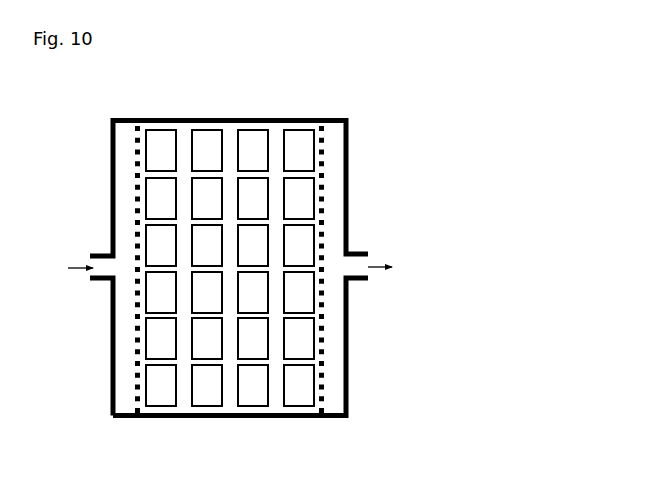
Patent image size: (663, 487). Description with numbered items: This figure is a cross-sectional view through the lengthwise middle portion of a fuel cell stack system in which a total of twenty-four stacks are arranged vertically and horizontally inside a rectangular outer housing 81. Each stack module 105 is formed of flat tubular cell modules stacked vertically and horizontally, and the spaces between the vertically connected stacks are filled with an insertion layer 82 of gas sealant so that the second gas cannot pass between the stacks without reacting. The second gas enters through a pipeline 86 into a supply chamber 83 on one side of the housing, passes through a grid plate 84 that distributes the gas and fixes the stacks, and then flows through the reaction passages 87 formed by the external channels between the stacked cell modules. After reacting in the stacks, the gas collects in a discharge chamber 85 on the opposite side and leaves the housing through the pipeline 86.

The outer housing 81 is at (227, 119).
The insertion layer 82 is at (185, 298).
The second gas supply chamber 83 is at (122, 158).
The grid plate 84 is at (112, 365).
The second gas discharge chamber 85 is at (337, 162).
The second gas pipeline 86 is at (97, 255).
The second gas reaction passage 87 is at (277, 398).
The stack module 105 is at (167, 400).